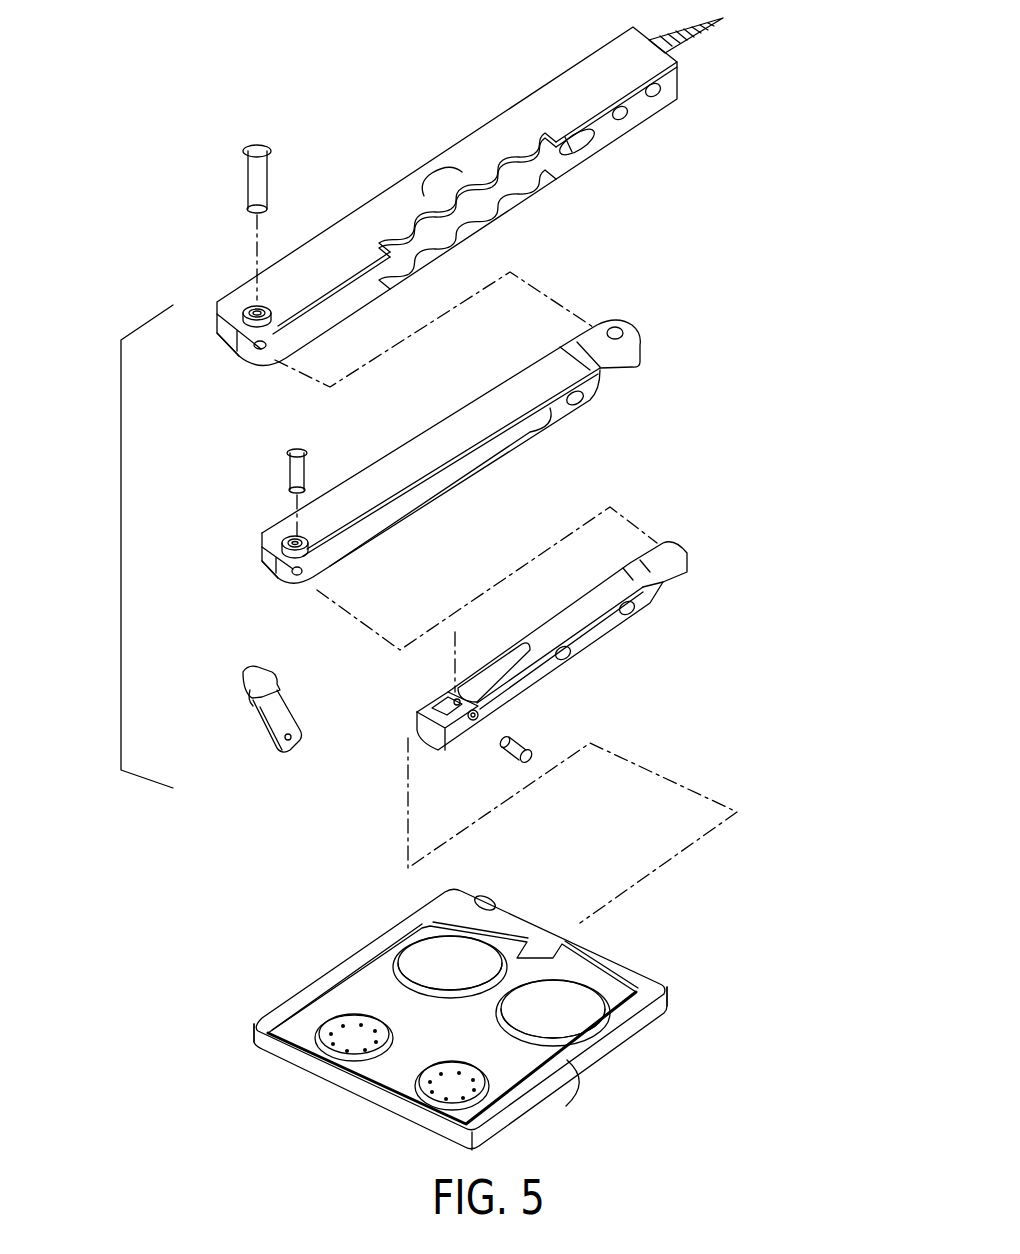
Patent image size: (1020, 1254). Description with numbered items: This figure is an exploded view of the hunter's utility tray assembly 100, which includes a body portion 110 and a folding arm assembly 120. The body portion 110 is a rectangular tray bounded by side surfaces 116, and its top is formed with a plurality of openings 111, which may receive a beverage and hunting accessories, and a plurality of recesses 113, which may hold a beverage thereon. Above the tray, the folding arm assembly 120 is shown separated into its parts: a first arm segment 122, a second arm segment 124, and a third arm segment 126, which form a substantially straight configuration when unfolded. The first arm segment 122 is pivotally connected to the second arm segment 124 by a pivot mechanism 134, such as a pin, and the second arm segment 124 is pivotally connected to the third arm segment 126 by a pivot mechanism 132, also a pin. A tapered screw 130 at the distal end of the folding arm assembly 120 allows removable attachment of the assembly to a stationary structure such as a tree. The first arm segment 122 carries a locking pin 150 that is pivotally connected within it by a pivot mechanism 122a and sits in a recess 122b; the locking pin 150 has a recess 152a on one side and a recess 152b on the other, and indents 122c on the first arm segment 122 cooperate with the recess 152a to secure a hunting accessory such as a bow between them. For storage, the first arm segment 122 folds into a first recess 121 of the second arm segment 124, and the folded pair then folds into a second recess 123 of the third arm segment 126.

The hunter's utility tray assembly 100 is at (788, 363).
The body portion 110 is at (420, 998).
The openings 111 is at (458, 920).
The recesses 113 is at (345, 1045).
The side surfaces 116 is at (273, 1050).
The folding arm assembly 120 is at (121, 522).
The first recess 121 is at (437, 488).
The first arm segment 122 is at (513, 646).
The pivot mechanism 122a is at (515, 758).
The recess 122b is at (490, 677).
The indents 122c is at (478, 712).
The second recess 123 is at (460, 213).
The second arm segment 124 is at (451, 451).
The third arm segment 126 is at (447, 196).
The tapered screw 130 is at (700, 33).
The pivot mechanism 132 is at (257, 178).
The pivot mechanism 134 is at (291, 472).
The locking pin 150 is at (260, 695).
The recess 152a is at (270, 683).
The recess 152b is at (257, 702).